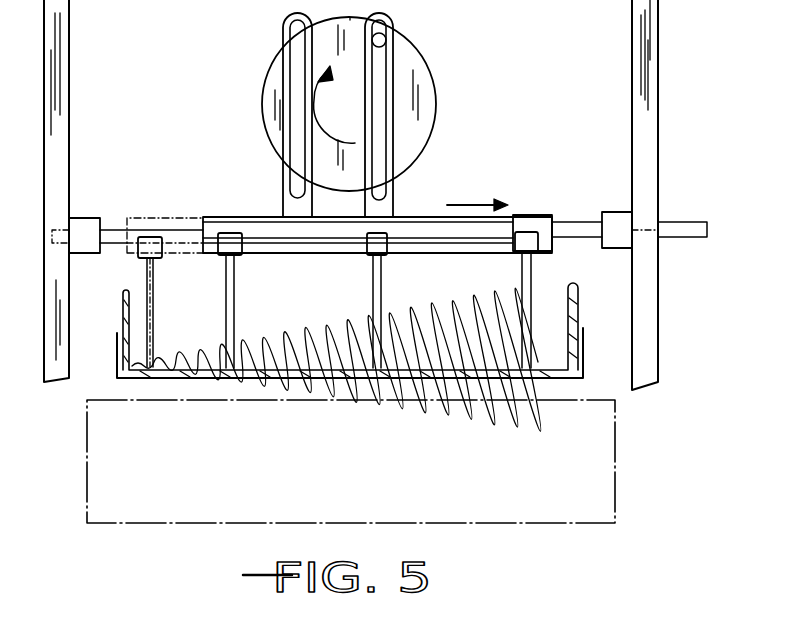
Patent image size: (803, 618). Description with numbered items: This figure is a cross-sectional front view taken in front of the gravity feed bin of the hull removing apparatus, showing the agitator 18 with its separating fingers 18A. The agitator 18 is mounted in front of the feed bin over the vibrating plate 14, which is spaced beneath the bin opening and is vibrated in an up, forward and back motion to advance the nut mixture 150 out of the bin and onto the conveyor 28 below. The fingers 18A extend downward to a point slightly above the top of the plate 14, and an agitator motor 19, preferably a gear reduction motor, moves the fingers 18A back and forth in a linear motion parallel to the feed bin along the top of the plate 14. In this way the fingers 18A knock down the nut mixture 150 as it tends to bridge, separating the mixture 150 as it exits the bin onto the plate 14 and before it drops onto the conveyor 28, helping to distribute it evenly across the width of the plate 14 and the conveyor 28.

The plate 14 is at (553, 378).
The agitator 18 is at (513, 215).
The separating fingers 18A is at (382, 294).
The agitator motor 19 is at (410, 62).
The conveyor 28 is at (600, 492).
The nut mixture 150 is at (268, 360).